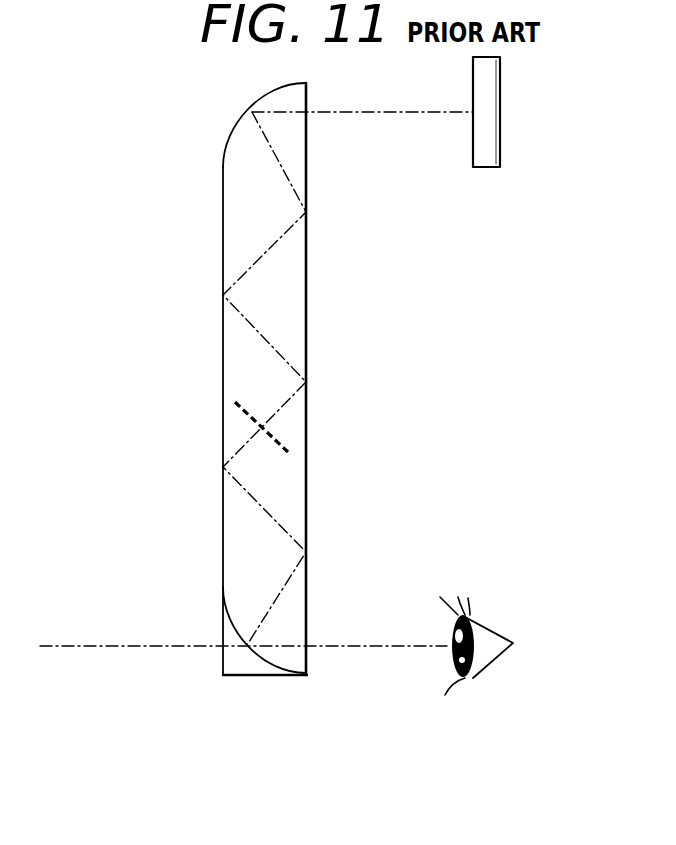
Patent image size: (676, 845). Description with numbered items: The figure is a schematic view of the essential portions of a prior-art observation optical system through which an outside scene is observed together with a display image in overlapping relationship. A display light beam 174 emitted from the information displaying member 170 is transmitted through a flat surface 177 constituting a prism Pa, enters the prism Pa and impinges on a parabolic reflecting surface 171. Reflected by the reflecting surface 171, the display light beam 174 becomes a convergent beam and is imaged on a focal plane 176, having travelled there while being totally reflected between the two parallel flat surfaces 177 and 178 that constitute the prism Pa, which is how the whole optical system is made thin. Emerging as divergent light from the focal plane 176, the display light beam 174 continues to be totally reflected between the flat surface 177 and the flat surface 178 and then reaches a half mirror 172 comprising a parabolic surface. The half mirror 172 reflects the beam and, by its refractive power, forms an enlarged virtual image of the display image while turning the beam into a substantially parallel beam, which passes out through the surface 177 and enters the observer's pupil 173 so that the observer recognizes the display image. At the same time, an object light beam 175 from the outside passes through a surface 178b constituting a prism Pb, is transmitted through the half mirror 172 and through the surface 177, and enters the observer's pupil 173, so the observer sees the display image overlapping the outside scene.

The information displaying member 170 is at (487, 162).
The parabolic reflecting surface 171 is at (248, 113).
The half mirror 172 is at (223, 620).
The observer's pupil 173 is at (488, 623).
The display light beam 174 is at (393, 110).
The object light beam 175 is at (79, 646).
The focal plane 176 is at (242, 410).
The flat surface 177 is at (308, 250).
The flat surface 178 is at (222, 251).
The surface 178b is at (222, 653).
The prism Pa is at (290, 423).
The prism Pb is at (240, 668).